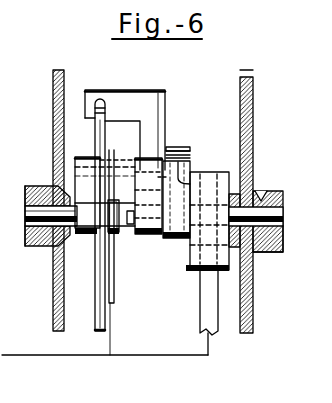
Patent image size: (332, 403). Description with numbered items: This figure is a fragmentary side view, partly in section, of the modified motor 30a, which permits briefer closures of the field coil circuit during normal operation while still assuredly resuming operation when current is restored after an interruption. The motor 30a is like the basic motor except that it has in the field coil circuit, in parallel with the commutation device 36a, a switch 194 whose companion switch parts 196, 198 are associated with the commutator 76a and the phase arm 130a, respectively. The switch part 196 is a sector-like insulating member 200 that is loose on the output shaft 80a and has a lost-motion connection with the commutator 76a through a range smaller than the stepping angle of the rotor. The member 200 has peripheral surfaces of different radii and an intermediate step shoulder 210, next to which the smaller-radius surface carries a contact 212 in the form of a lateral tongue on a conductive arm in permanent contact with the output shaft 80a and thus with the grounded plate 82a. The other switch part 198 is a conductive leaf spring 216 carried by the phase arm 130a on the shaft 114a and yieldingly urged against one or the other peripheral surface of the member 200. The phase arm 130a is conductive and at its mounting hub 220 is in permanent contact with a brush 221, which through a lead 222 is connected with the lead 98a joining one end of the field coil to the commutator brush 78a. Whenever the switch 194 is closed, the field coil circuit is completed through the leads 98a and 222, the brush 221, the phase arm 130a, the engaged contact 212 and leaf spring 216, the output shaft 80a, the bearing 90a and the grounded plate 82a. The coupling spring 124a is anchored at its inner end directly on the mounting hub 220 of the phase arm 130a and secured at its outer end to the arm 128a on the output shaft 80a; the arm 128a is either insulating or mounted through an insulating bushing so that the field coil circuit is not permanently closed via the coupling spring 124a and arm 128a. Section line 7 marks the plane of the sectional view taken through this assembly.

The coupling spring 124a is at (89, 314).
The grounded plate 82a is at (254, 312).
The shaft 114a is at (43, 210).
The arm 128a is at (154, 130).
The phase arm 130a is at (84, 180).
The mounting hub 220 is at (105, 195).
The brush 221 is at (114, 268).
The lead 222 is at (112, 338).
The sector-like insulating member 200 is at (177, 236).
The step shoulder 210 is at (168, 150).
The switch 194 is at (171, 154).
The conductive leaf spring 216 is at (176, 150).
The switch part 198 is at (179, 153).
The switch part 196 is at (184, 159).
The commutator 76a is at (209, 168).
The contact 212 is at (189, 192).
The commutator brush 78a is at (210, 306).
The commutation device 36a is at (181, 282).
The lead 98a is at (86, 357).
The output shaft 80a is at (248, 217).
The bearing 90a is at (258, 247).
The section line 7 is at (231, 57).
The modified motor 30a is at (217, 65).